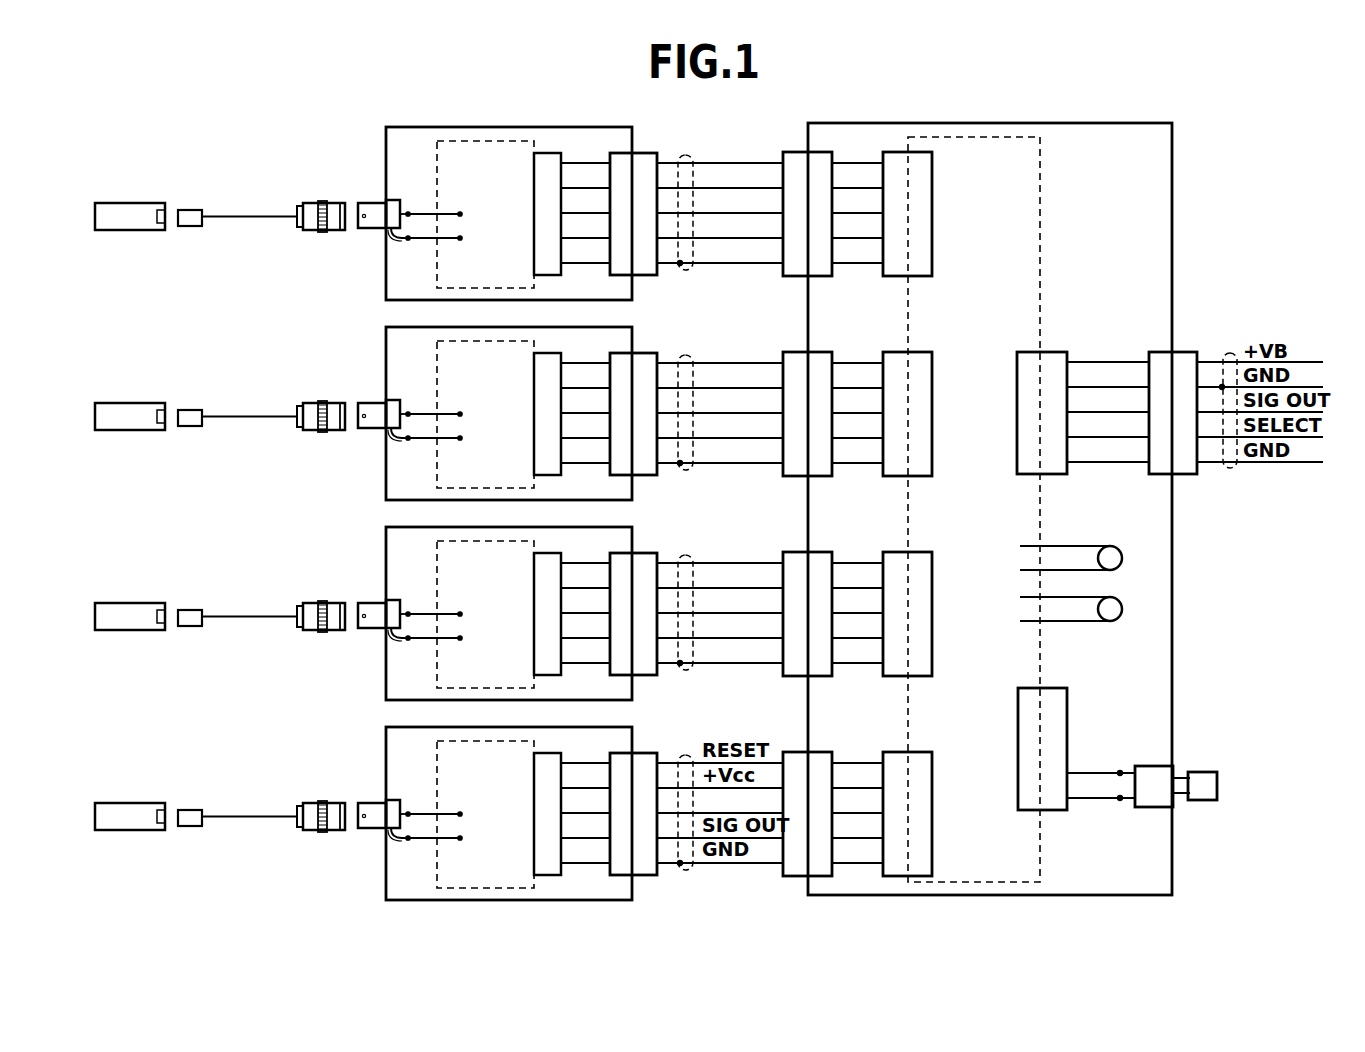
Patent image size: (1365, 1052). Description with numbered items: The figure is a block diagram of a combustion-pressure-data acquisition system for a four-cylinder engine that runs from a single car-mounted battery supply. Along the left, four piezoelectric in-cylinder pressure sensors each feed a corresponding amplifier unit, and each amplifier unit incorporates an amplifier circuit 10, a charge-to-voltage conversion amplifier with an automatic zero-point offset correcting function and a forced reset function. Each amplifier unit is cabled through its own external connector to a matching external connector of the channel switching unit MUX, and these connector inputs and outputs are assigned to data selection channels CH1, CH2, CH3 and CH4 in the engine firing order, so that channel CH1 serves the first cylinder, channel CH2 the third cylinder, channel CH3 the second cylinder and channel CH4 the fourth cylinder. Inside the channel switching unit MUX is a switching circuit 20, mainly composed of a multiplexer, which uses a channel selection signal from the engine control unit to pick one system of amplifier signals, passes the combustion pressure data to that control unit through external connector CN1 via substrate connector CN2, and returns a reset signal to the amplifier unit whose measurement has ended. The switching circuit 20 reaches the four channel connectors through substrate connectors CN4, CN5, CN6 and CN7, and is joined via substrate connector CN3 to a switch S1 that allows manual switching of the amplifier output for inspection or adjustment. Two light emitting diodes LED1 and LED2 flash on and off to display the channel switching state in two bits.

The amplifier circuit 10 is at (465, 512).
The switching circuit 20 is at (1040, 185).
The channel switching unit MUX is at (1172, 192).
The external connector CN1 is at (1185, 352).
The substrate connector CN2 is at (1055, 352).
The substrate connector CN3 is at (1055, 688).
The substrate connector CN4 is at (875, 798).
The substrate connector CN5 is at (875, 598).
The substrate connector CN6 is at (875, 398).
The substrate connector CN7 is at (875, 203).
The light emitting diode LED1 is at (1120, 619).
The light emitting diode LED2 is at (1137, 530).
The switch S1 is at (1205, 772).
The channel CH1 is at (817, 832).
The channel CH2 is at (817, 632).
The channel CH3 is at (817, 432).
The channel CH4 is at (817, 232).